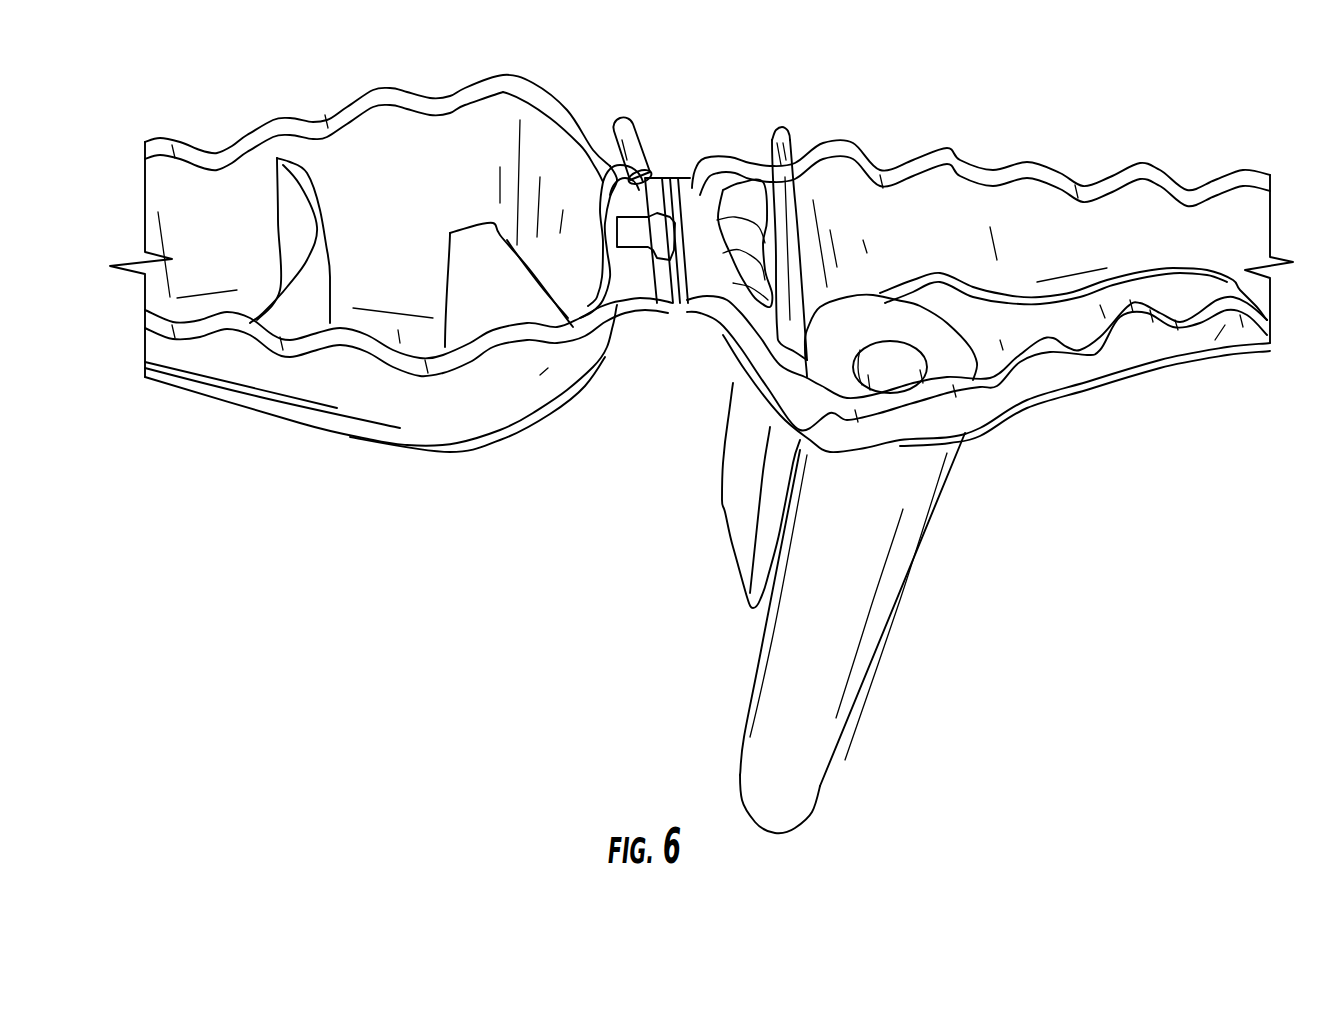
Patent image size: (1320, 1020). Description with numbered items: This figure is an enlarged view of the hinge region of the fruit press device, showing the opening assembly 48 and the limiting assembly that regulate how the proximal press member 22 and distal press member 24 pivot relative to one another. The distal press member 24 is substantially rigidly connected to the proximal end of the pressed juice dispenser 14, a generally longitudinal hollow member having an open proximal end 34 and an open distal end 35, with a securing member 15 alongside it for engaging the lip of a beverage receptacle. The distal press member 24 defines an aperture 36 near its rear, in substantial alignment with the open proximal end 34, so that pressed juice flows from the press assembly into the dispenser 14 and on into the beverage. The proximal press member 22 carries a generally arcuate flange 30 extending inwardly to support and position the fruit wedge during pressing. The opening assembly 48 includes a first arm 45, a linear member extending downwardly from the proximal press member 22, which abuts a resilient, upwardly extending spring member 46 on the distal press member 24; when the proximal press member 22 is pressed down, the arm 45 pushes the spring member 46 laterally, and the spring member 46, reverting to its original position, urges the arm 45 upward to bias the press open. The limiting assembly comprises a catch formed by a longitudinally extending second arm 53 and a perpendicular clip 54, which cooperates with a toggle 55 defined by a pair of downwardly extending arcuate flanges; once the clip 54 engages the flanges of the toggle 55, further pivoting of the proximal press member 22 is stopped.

The pressed juice dispenser 14 is at (852, 653).
The securing member 15 is at (742, 520).
The proximal press member 22 is at (353, 415).
The distal press member 24 is at (1193, 340).
The flange 30 is at (303, 305).
The open proximal end 34 is at (900, 362).
The open distal end 35 is at (784, 836).
The aperture 36 is at (927, 358).
The first arm 45 is at (478, 277).
The spring member 46 is at (795, 147).
The opening assembly 48 is at (787, 80).
The second arm 53 is at (612, 158).
The clip 54 is at (644, 152).
The toggle 55 is at (737, 228).